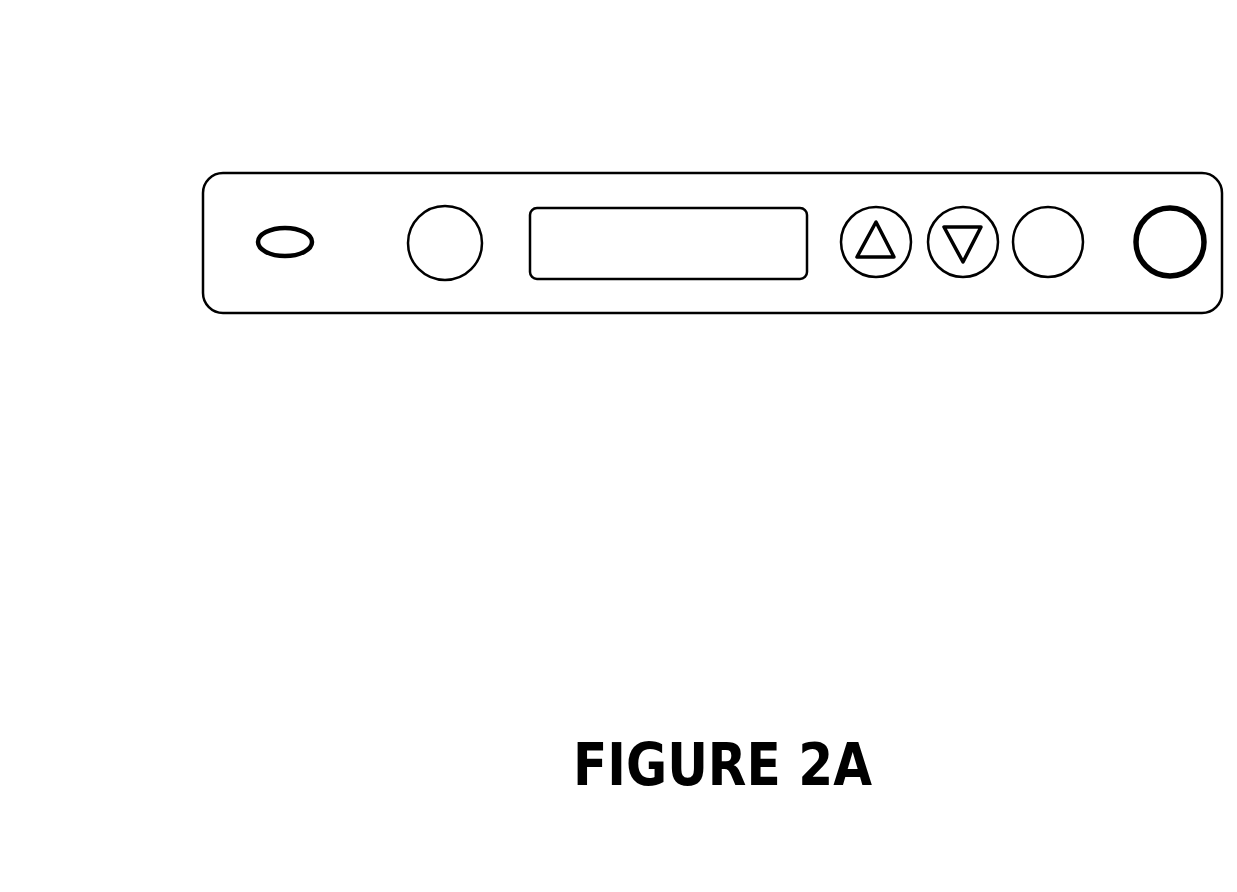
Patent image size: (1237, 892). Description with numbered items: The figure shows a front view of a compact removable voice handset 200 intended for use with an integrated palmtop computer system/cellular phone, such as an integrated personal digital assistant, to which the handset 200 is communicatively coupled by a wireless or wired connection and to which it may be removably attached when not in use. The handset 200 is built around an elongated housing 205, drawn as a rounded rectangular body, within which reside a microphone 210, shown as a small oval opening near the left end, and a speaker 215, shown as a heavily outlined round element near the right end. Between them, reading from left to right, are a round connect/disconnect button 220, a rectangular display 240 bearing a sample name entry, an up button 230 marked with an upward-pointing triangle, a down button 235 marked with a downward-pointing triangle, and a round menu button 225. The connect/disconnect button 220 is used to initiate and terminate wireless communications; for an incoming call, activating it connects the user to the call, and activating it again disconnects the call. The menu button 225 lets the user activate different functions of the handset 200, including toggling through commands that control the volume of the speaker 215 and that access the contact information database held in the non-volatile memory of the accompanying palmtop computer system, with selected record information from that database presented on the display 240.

The compact removable voice handset 200 is at (218, 64).
The housing 205 is at (265, 205).
The microphone 210 is at (283, 258).
The speaker 215 is at (1188, 256).
The connect/disconnect button 220 is at (464, 256).
The menu button 225 is at (1067, 256).
The up button 230 is at (875, 278).
The down button 235 is at (963, 278).
The display 240 is at (687, 269).